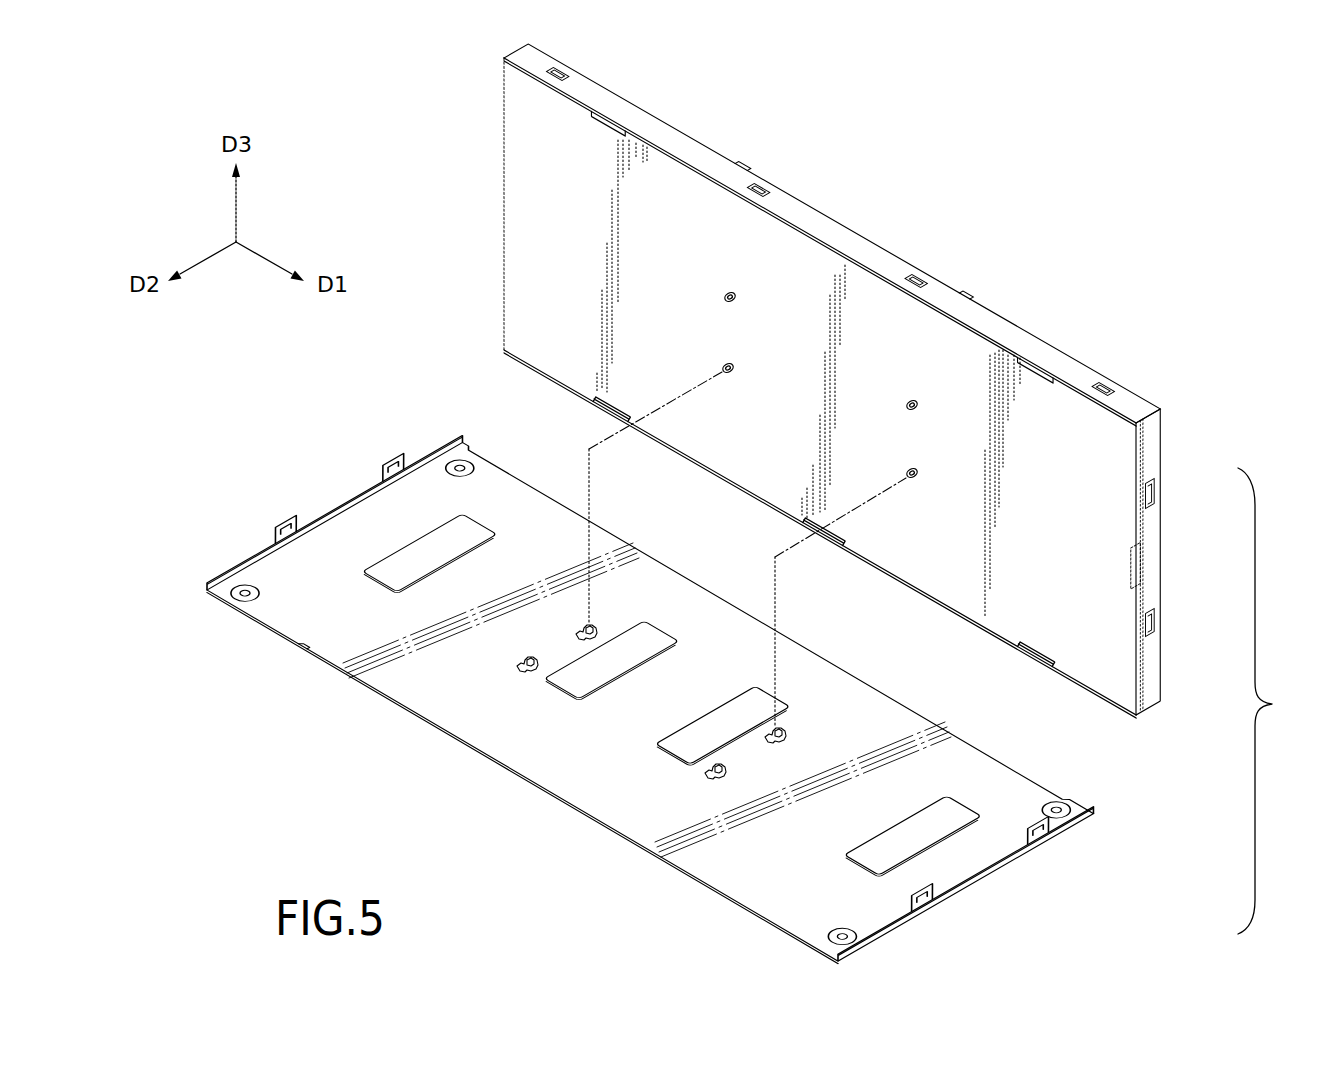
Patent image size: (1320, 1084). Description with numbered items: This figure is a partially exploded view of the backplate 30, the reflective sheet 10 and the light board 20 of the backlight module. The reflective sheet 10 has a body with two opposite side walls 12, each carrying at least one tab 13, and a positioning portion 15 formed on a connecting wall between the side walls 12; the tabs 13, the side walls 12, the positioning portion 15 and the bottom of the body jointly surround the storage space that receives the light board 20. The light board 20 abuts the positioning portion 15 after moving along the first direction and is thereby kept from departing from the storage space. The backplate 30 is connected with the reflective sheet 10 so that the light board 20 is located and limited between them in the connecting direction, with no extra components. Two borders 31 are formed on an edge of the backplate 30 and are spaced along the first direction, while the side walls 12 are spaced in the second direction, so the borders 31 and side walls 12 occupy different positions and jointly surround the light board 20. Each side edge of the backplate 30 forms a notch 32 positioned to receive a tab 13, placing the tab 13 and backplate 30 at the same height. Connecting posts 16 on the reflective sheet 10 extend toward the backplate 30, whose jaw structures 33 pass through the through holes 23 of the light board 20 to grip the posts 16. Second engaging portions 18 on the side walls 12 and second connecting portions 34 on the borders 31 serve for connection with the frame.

The reflective sheet 10 is at (828, 188).
The side wall 12 is at (687, 147).
The tab 13 is at (1040, 370).
The positioning portion 15 is at (1140, 567).
The connecting post 16 is at (726, 292).
The second engaging portion 18 is at (918, 282).
The light board 20 is at (1094, 670).
The through hole 23 is at (733, 305).
The backplate 30 is at (238, 546).
The border 31 is at (333, 520).
The notch 32 is at (318, 648).
The jaw structure 33 is at (528, 686).
The second connecting portion 34 is at (392, 468).